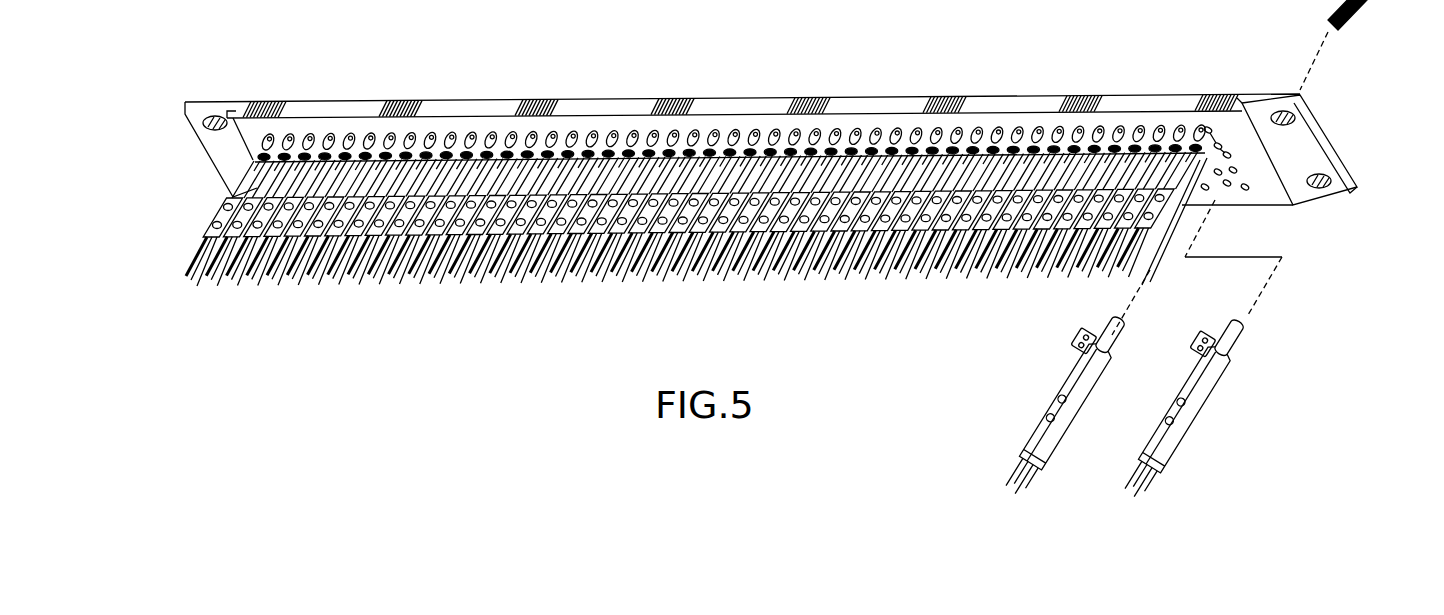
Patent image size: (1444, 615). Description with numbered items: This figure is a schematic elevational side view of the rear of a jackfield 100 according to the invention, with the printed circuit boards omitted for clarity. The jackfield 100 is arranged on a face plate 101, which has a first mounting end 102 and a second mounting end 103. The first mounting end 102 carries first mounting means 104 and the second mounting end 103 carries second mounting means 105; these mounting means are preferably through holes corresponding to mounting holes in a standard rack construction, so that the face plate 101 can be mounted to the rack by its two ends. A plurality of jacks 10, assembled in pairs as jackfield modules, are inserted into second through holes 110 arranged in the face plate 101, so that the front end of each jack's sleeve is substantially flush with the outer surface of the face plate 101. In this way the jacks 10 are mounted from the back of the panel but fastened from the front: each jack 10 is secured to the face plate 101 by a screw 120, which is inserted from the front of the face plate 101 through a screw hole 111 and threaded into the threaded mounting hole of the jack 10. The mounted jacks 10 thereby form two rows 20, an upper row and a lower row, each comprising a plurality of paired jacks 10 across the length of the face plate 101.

The jack 10 is at (1226, 410).
The rows of jacks 20 is at (1104, 303).
The jackfield 100 is at (716, 78).
The face plate 101 is at (986, 104).
The first mounting end 102 is at (1312, 146).
The second mounting end 103 is at (228, 112).
The first mounting means 104 is at (1285, 114).
The second mounting means 105 is at (210, 118).
The second through holes 110 is at (1220, 143).
The screw hole 111 is at (1211, 134).
The screw 120 is at (1362, 3).